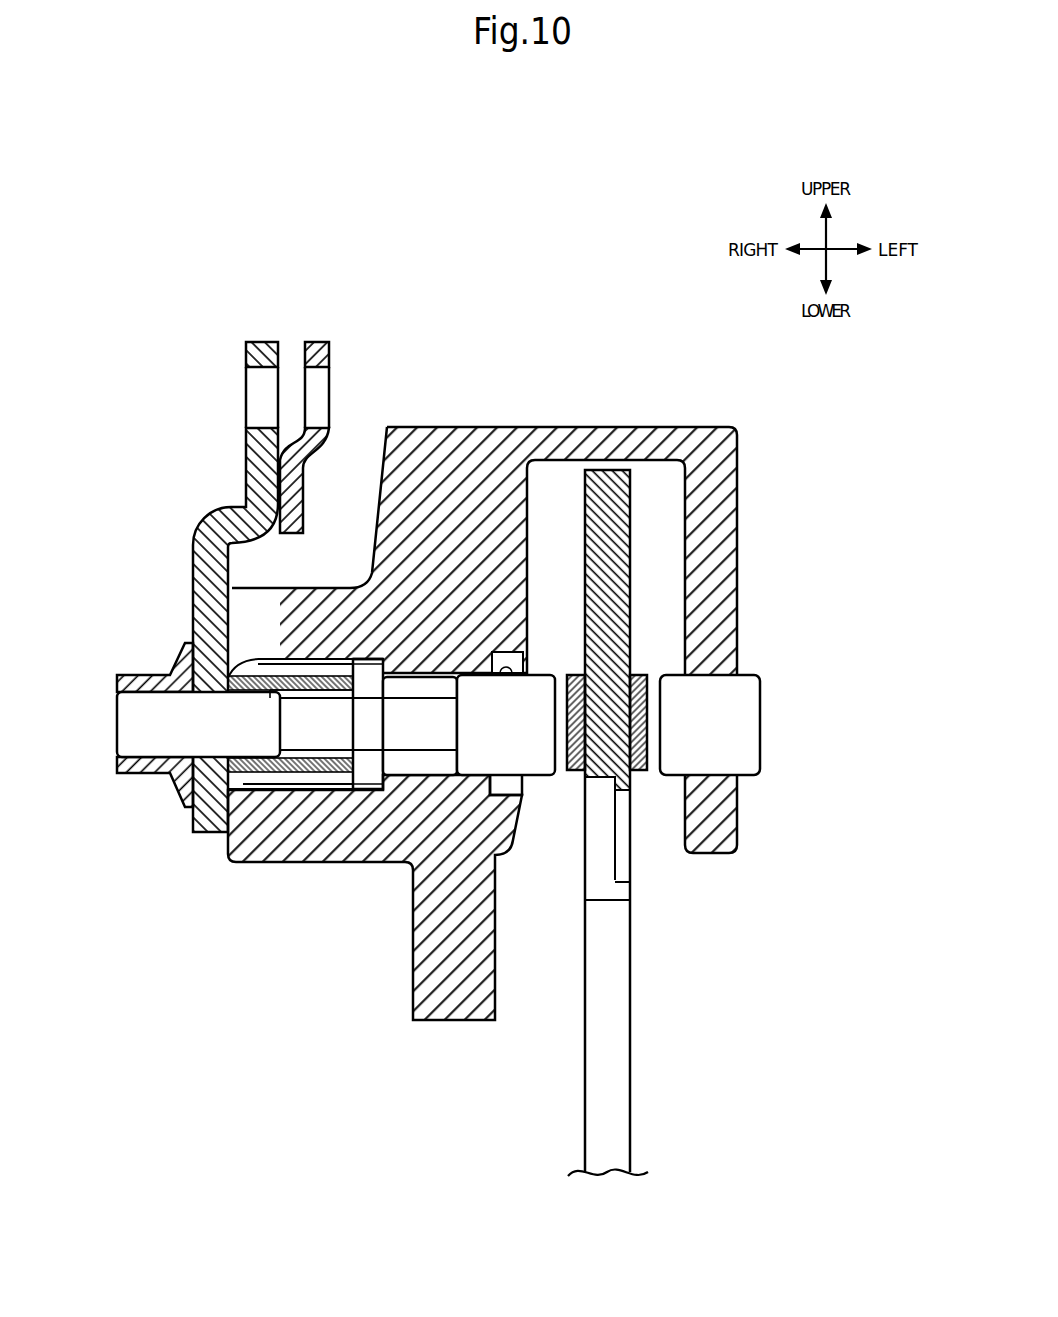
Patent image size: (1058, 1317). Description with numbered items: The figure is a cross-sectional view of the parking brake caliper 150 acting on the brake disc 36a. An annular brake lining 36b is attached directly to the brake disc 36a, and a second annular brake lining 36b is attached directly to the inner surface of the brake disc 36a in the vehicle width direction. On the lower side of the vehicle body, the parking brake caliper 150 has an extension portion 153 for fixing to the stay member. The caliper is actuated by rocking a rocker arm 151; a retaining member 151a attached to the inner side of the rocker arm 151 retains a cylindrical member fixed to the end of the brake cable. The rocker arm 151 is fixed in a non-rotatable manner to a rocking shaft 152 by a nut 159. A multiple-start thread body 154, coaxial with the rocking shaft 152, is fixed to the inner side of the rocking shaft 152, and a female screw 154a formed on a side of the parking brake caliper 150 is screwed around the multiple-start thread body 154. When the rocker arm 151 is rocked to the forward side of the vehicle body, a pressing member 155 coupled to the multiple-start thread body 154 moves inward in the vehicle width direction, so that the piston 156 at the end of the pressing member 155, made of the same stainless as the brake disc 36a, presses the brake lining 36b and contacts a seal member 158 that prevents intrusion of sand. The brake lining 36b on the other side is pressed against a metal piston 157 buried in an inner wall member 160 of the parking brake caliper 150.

The parking brake caliper 150 is at (473, 418).
The rocker arm 151 is at (247, 466).
The retaining member 151a is at (295, 483).
The rocking shaft 152 is at (130, 721).
The extension portion 153 is at (422, 980).
The multiple-start thread body 154 is at (260, 775).
The female screw 154a is at (345, 790).
The pressing member 155 is at (313, 740).
The piston 156 is at (537, 765).
The metal piston 157 is at (744, 722).
The seal member 158 is at (514, 660).
The nut 159 is at (148, 766).
The inner wall member 160 is at (718, 535).
The brake disc 36a is at (617, 1045).
The brake lining 36b is at (578, 765).